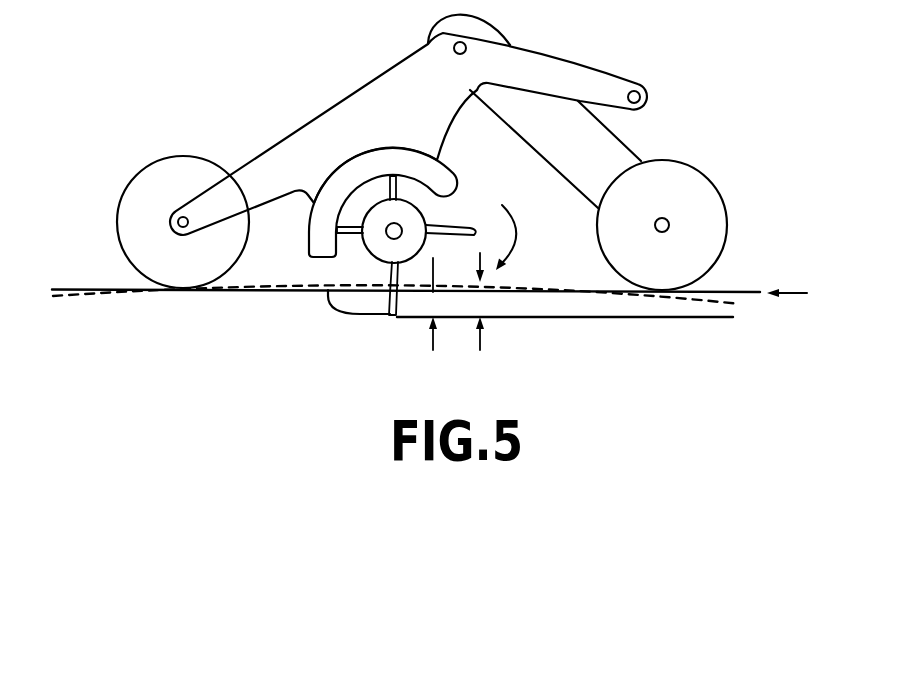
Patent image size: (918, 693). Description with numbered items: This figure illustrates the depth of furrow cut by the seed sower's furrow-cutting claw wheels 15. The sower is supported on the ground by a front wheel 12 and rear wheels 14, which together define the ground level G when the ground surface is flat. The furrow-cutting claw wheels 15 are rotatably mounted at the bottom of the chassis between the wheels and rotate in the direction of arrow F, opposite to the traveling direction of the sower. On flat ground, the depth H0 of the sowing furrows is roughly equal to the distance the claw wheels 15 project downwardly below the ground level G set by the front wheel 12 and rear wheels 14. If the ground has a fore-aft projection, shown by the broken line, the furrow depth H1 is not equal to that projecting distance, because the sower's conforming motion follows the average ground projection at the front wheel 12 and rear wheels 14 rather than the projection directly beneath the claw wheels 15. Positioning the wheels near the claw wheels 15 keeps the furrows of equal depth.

The front wheel 12 is at (133, 202).
The rear wheels 14 is at (705, 200).
The furrow-cutting claw wheels 15 is at (466, 201).
The arrow indicating rotation direction F is at (517, 240).
The ground level G is at (803, 292).
The depth of the sowing furrows H0 is at (438, 321).
The depth of the sowing furrows H1 is at (487, 318).